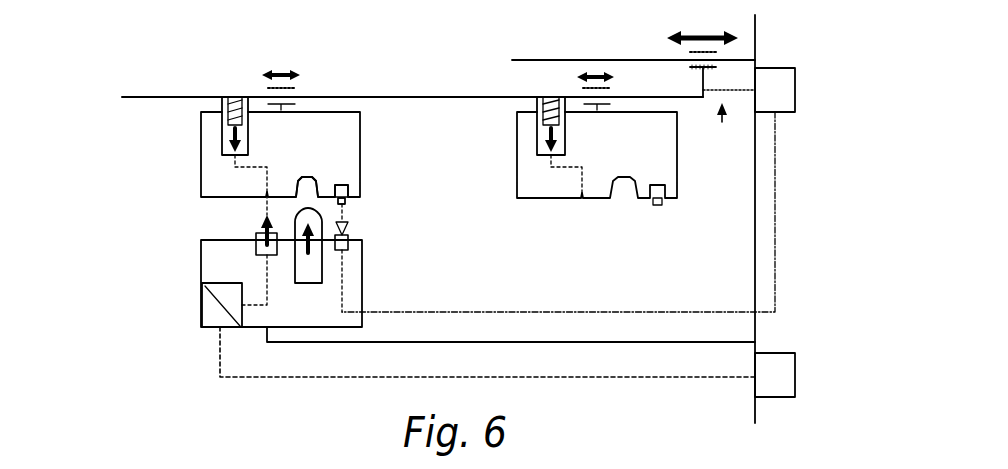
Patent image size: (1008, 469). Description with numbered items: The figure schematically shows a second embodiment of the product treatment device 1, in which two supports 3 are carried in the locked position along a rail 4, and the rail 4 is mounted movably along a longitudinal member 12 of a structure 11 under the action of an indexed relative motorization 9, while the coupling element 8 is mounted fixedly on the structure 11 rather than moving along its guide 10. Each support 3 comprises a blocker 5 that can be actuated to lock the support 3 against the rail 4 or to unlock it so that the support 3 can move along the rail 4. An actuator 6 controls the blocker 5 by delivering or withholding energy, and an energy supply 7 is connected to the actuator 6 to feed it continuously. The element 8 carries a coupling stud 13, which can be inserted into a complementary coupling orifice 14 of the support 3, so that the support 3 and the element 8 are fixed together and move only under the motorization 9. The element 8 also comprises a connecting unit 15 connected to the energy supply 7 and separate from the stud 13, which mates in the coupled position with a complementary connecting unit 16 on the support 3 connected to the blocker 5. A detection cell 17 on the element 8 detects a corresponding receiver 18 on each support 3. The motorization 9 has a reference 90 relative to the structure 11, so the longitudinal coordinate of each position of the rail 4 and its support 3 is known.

The product treatment device 1 is at (772, 42).
The support 3 is at (188, 150).
The rail 4 is at (320, 97).
The blocker 5 is at (235, 125).
The actuator 6 is at (207, 291).
The energy supply 7 is at (772, 377).
The element 8 is at (367, 272).
The relative motorization 9 is at (775, 93).
The guide 10 is at (600, 342).
The structure 11 is at (755, 289).
The longitudinal member 12 is at (615, 60).
The coupling stud 13 is at (310, 273).
The coupling orifice 14 is at (307, 177).
The connecting unit 15 is at (260, 248).
The complementary connecting unit 16 is at (265, 218).
The detection cell 17 is at (350, 242).
The receiver 18 is at (346, 192).
The reference 90 is at (722, 122).